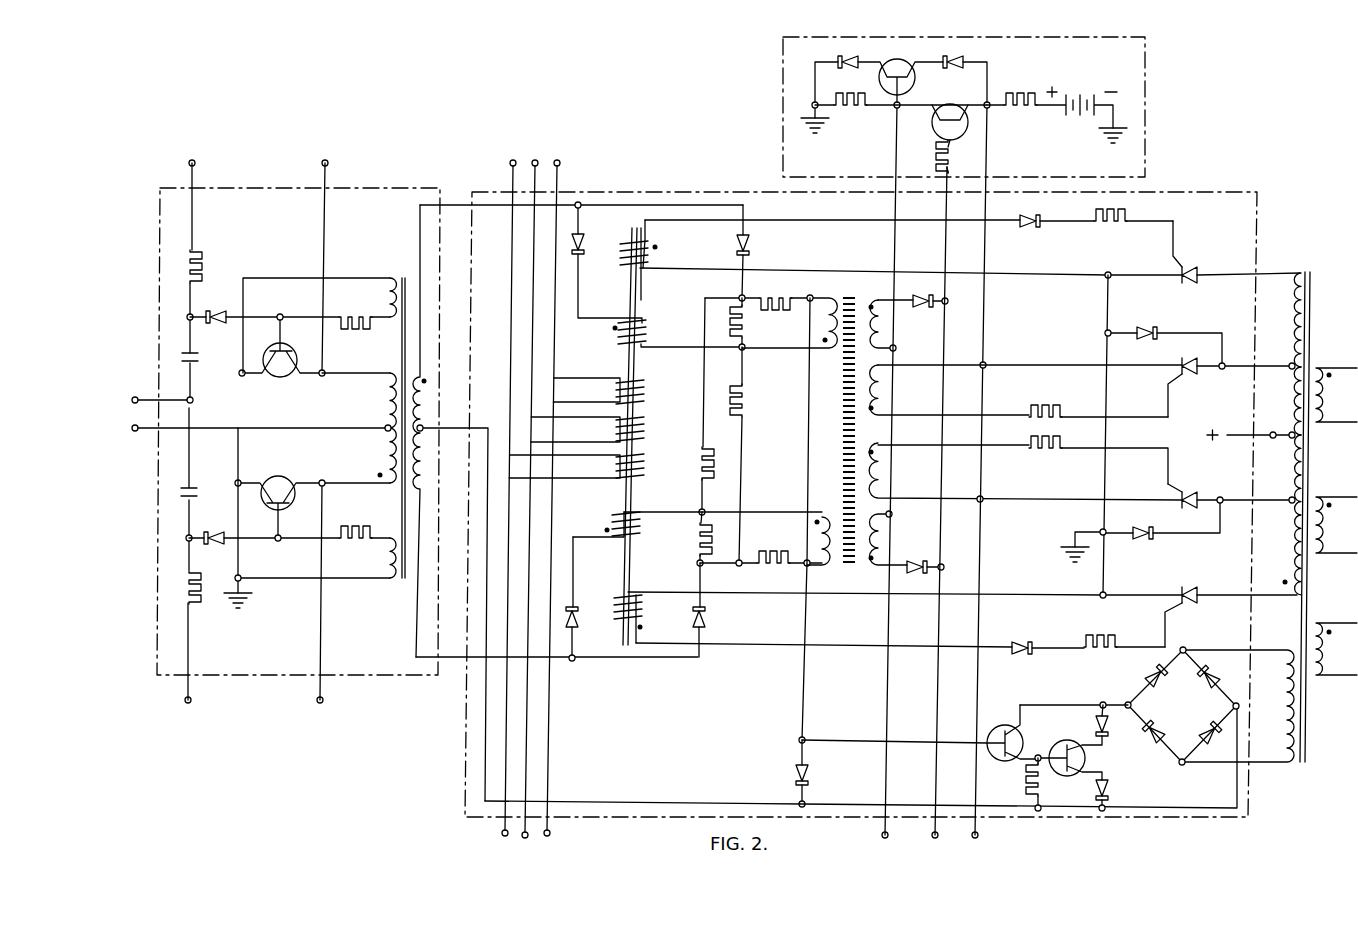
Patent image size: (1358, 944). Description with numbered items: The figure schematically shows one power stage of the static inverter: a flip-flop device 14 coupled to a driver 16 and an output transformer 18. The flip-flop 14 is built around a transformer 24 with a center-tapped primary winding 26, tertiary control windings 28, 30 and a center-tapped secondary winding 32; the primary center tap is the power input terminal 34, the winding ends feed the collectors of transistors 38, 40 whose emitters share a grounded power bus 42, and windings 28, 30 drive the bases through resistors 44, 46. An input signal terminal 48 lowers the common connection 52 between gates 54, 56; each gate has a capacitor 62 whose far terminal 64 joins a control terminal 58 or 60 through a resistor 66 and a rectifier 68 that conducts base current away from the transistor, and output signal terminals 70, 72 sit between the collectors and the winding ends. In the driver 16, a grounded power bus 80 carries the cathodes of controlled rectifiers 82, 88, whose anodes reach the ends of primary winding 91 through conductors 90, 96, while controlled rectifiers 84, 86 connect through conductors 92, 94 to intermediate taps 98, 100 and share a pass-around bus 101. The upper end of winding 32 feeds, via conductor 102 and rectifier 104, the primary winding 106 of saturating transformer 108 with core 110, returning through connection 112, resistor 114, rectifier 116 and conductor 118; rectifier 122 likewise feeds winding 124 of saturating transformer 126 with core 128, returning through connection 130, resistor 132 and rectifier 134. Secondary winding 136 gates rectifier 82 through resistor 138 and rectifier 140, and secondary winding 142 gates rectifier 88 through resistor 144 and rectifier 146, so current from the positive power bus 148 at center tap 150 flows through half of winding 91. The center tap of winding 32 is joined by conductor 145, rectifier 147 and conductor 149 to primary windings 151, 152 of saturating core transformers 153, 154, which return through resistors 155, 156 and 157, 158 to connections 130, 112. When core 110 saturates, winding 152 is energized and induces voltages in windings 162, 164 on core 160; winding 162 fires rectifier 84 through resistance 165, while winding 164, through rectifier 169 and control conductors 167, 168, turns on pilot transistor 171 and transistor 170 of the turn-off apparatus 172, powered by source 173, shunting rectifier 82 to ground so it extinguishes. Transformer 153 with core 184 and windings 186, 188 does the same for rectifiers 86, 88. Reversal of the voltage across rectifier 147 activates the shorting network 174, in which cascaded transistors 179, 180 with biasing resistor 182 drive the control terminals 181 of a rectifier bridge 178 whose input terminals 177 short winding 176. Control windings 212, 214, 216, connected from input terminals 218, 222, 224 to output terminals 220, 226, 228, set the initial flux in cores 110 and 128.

The flip-flop device 14 is at (392, 190).
The driver 16 is at (1184, 192).
The output transformer 18 is at (1311, 272).
The output transformer 24 is at (400, 275).
The center-tapped primary winding 26 is at (382, 410).
The tertiary control winding 28 is at (380, 296).
The tertiary control winding 30 is at (385, 558).
The center tapped secondary winding 32 is at (426, 405).
The flip-flop power input terminal 34 is at (254, 442).
The transistor 38 is at (314, 327).
The transistor 40 is at (307, 490).
The grounded power bus 42 is at (246, 440).
The resistor 44 is at (358, 312).
The resistor 46 is at (358, 544).
The input signal terminal 48 is at (157, 388).
The common connection 52 is at (200, 400).
The gate 54 is at (233, 266).
The gate 56 is at (231, 633).
The control terminal 58 is at (210, 200).
The control terminal 60 is at (205, 653).
The capacitor 62 is at (206, 418).
The terminal 64 is at (178, 426).
The resistor 66 is at (182, 414).
The rectifier 68 is at (264, 416).
The output signal terminal 70 is at (307, 261).
The output signal terminal 72 is at (300, 593).
The grounded power bus 80 is at (1105, 433).
The controlled rectifier 82 is at (1196, 270).
The controlled rectifier 84 is at (1195, 378).
The controlled rectifier 86 is at (1196, 490).
The controlled rectifier 88 is at (1190, 584).
The conductor 90 is at (1292, 272).
The primary winding 91 is at (1292, 401).
The conductor 92 is at (1280, 372).
The conductor 94 is at (1280, 503).
The conductor 96 is at (1272, 583).
The intermediate tap 98 is at (1290, 373).
The intermediate tap 100 is at (1279, 515).
The pass around bus 101 is at (984, 300).
The conductor 102 is at (474, 205).
The rectifier 104 is at (607, 262).
The primary winding 106 is at (646, 328).
The saturating transformer 108 is at (693, 260).
The saturable core 110 is at (641, 284).
The connection 112 is at (745, 352).
The resistor 114 is at (744, 407).
The rectifier 116 is at (706, 624).
The conductor 118 is at (565, 662).
The rectifier 122 is at (618, 598).
The winding 124 is at (640, 527).
The saturating transformer 126 is at (620, 651).
The saturating core 128 is at (616, 540).
The connection 130 is at (700, 508).
The resistor 132 is at (700, 446).
The rectifier 134 is at (874, 251).
The secondary winding 136 is at (622, 262).
The resistor 138 is at (1095, 232).
The rectifier 140 is at (1038, 228).
The secondary winding 142 is at (660, 623).
The resistor 144 is at (1098, 636).
The conductor 145 is at (655, 806).
The rectifier 146 is at (1030, 640).
The rectifier 147 is at (810, 772).
The positive power bus 148 is at (1242, 435).
The conductor 149 is at (805, 462).
The center tap 150 is at (1273, 438).
The primary winding 151 is at (812, 532).
The primary winding 152 is at (828, 296).
The saturating core transformer 153 is at (860, 590).
The saturating core transformer 154 is at (868, 295).
The resistor 155 is at (775, 567).
The resistor 156 is at (696, 549).
The resistor 157 is at (757, 293).
The resistor 158 is at (742, 328).
The core 160 is at (877, 418).
The secondary winding 162 is at (884, 393).
The secondary winding 164 is at (884, 330).
The resistance 165 is at (1045, 412).
The control conductor 167 is at (934, 620).
The control conductor 168 is at (884, 628).
The rectifier 169 is at (932, 296).
The transistor 170 is at (900, 60).
The pilot transistor 171 is at (930, 124).
The turn off apparatus 172 is at (1150, 52).
The source of control potential 173 is at (1085, 128).
The shorting network 174 is at (1066, 701).
The winding 176 is at (1283, 692).
The input terminals 177 is at (1188, 650).
The rectifier bridge 178 is at (1193, 715).
The transistor 179 is at (1067, 758).
The transistor 180 is at (920, 736).
The control terminals 181 is at (1138, 695).
The biasing resistor 182 is at (1024, 794).
The saturable core 184 is at (850, 440).
The secondary winding 186 is at (884, 470).
The secondary winding 188 is at (884, 534).
The control winding 212 is at (644, 387).
The control winding 214 is at (643, 422).
The control winding 216 is at (643, 466).
The input terminal 218 is at (560, 163).
The output terminal 220 is at (550, 833).
The input terminal 222 is at (535, 160).
The input terminal 224 is at (510, 166).
The output terminal 226 is at (528, 838).
The output terminal 228 is at (502, 833).